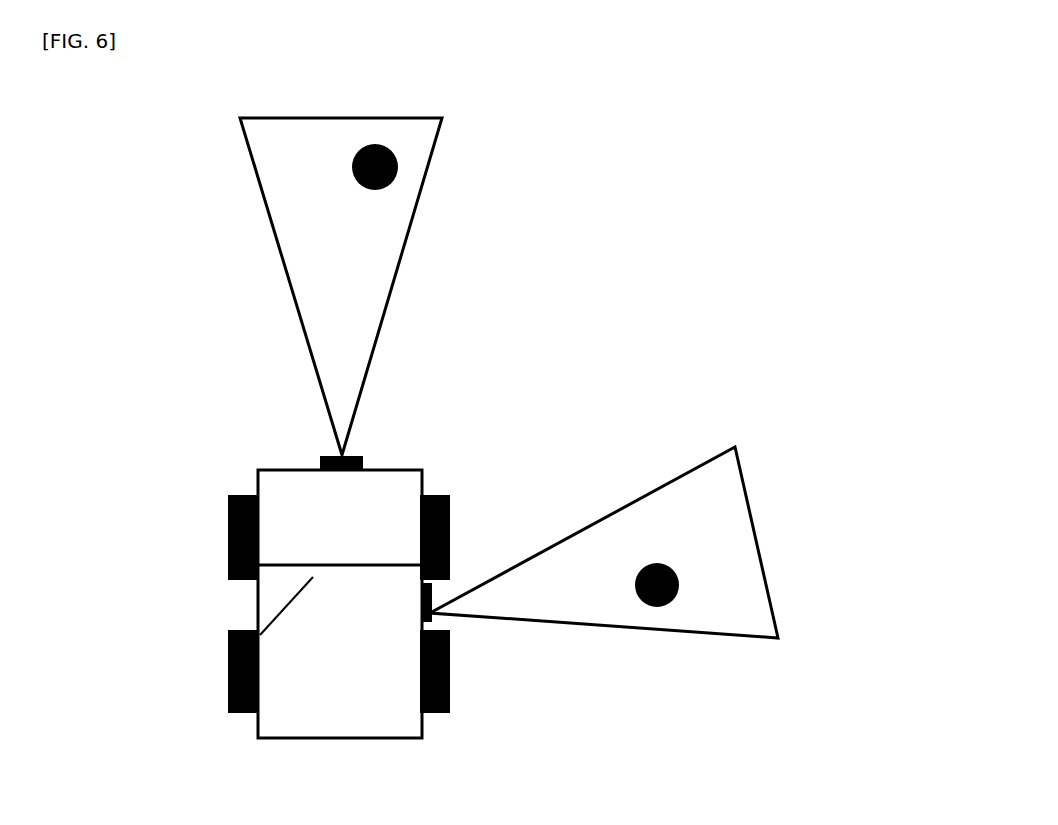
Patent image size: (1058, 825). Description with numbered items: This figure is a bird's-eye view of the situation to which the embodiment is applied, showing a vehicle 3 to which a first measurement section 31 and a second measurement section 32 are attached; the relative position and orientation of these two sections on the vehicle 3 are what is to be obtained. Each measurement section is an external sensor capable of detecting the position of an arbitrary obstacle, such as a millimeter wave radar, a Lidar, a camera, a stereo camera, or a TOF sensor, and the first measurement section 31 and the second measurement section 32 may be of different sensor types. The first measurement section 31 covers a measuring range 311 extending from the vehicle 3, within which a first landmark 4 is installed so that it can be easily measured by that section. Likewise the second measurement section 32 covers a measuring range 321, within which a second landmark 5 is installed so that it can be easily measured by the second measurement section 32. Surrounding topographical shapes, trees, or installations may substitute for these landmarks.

The vehicle 3 is at (227, 657).
The first measurement section 31 is at (362, 457).
The measuring range of the first measurement section 311 is at (380, 305).
The first landmark 4 is at (395, 157).
The second measurement section 32 is at (432, 590).
The measuring range of the second measurement section 321 is at (713, 468).
The second landmark 5 is at (668, 563).